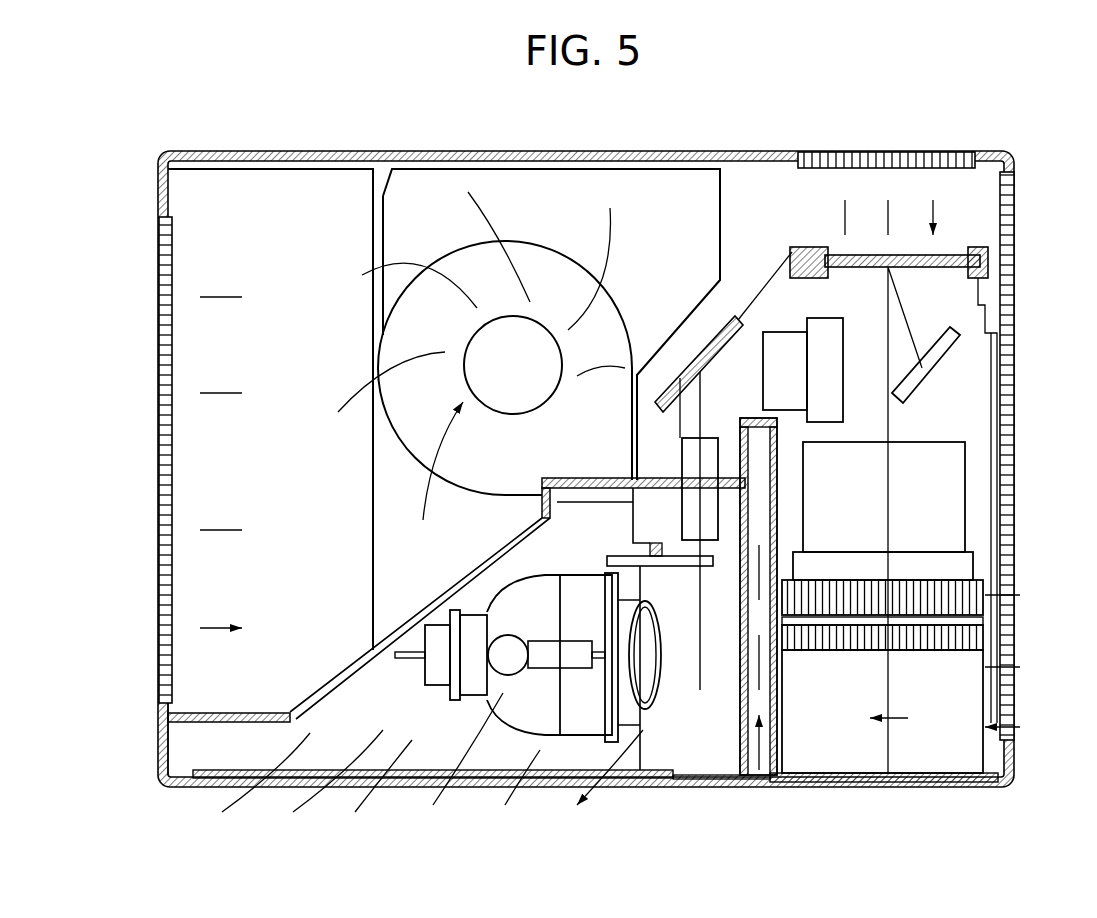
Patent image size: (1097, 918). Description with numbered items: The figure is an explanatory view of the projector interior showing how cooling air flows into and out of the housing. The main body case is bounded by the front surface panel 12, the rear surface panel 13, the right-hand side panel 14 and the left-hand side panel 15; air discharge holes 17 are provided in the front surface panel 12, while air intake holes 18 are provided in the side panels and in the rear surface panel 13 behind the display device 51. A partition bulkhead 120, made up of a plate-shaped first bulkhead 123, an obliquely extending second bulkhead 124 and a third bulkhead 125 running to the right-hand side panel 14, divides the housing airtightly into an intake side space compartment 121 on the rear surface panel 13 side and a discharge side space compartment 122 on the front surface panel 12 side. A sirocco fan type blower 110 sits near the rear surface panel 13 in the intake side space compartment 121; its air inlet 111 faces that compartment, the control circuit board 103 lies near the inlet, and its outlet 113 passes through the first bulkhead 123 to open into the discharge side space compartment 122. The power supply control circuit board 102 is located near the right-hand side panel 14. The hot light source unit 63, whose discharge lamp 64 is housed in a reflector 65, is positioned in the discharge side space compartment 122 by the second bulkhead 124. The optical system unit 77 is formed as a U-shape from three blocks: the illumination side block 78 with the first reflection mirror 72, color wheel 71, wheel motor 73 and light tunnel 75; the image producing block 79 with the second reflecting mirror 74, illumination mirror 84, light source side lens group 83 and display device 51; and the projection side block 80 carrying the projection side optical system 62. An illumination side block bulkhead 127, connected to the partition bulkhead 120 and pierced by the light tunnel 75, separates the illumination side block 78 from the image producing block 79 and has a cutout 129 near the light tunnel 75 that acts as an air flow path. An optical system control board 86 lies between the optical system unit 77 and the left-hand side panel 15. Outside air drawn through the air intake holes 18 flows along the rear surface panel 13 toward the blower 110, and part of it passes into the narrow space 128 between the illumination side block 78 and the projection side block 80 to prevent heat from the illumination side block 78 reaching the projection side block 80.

The front surface panel 12 is at (178, 786).
The rear surface panel 13 is at (486, 151).
The right-hand side panel 14 is at (160, 772).
The left-hand side panel 15 is at (1007, 290).
The air discharge holes 17 is at (613, 787).
The air intake holes 18 is at (866, 156).
The display device 51 is at (930, 258).
The projection side optical system 62 is at (950, 688).
The light source unit 63 is at (536, 711).
The discharge lamp 64 is at (443, 662).
The reflector 65 is at (455, 700).
The color wheel 71 is at (680, 545).
The first reflection mirror 72 is at (700, 690).
The wheel motor 73 is at (667, 520).
The second reflecting mirror 74 is at (693, 350).
The light tunnel 75 is at (708, 506).
The optical system unit 77 is at (935, 735).
The illumination side block 78 is at (728, 735).
The image producing block 79 is at (937, 420).
The projection side block 80 is at (942, 468).
The light source side lens group 83 is at (827, 330).
The illumination mirror 84 is at (937, 349).
The optical system control board 86 is at (985, 620).
The power supply control circuit board 102 is at (244, 212).
The control circuit board 103 is at (443, 218).
The blower 110 is at (538, 267).
The air inlet 111 is at (532, 340).
The outlet 113 is at (603, 710).
The partition bulkhead 120 is at (257, 728).
The intake side space compartment 121 is at (410, 228).
The discharge side space compartment 122 is at (577, 495).
The first bulkhead 123 is at (542, 497).
The second bulkhead 124 is at (372, 652).
The third bulkhead 125 is at (168, 716).
The illumination side block bulkhead 127 is at (738, 418).
The narrow space 128 is at (778, 740).
The cutout 129 is at (745, 418).